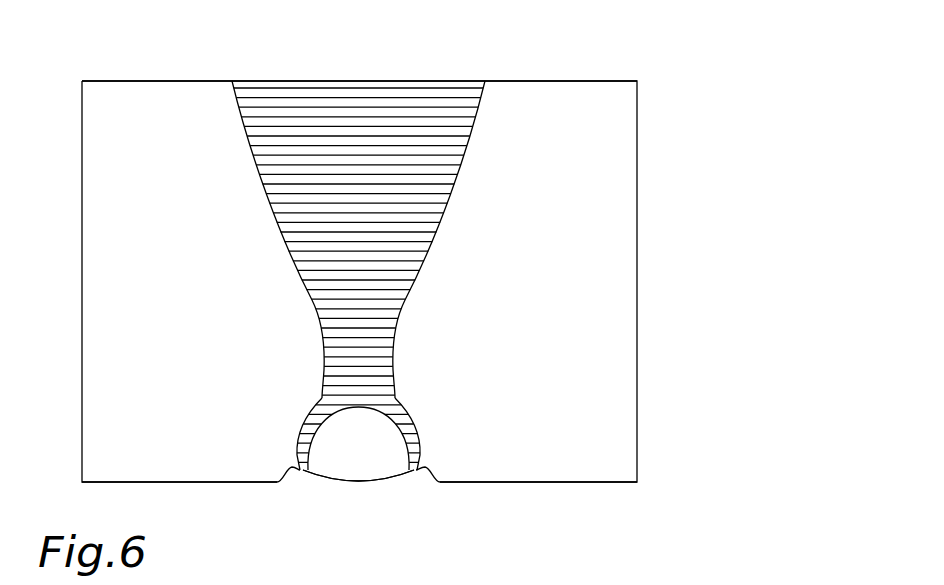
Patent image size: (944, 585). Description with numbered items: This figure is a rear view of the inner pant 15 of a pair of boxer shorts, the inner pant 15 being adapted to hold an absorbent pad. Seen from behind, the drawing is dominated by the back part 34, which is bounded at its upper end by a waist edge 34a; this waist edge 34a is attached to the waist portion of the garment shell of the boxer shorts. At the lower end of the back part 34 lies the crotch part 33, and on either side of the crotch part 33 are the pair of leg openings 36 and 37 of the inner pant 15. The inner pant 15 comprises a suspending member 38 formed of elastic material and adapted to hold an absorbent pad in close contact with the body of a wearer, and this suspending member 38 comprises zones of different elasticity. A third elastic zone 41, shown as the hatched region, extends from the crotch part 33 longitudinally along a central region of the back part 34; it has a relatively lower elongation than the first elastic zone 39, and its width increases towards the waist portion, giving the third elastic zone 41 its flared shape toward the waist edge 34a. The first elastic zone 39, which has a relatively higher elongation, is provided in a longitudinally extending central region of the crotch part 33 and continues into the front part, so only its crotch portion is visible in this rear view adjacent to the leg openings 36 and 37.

The inner pant 15 is at (722, 103).
The back part 34 is at (602, 259).
The waist edge 34a is at (180, 81).
The third elastic zone 41 is at (397, 245).
The first elastic zone 39 is at (325, 462).
The suspending member 38 is at (350, 450).
The crotch part 33 is at (392, 487).
The leg opening 37 is at (177, 483).
The leg opening 36 is at (542, 482).